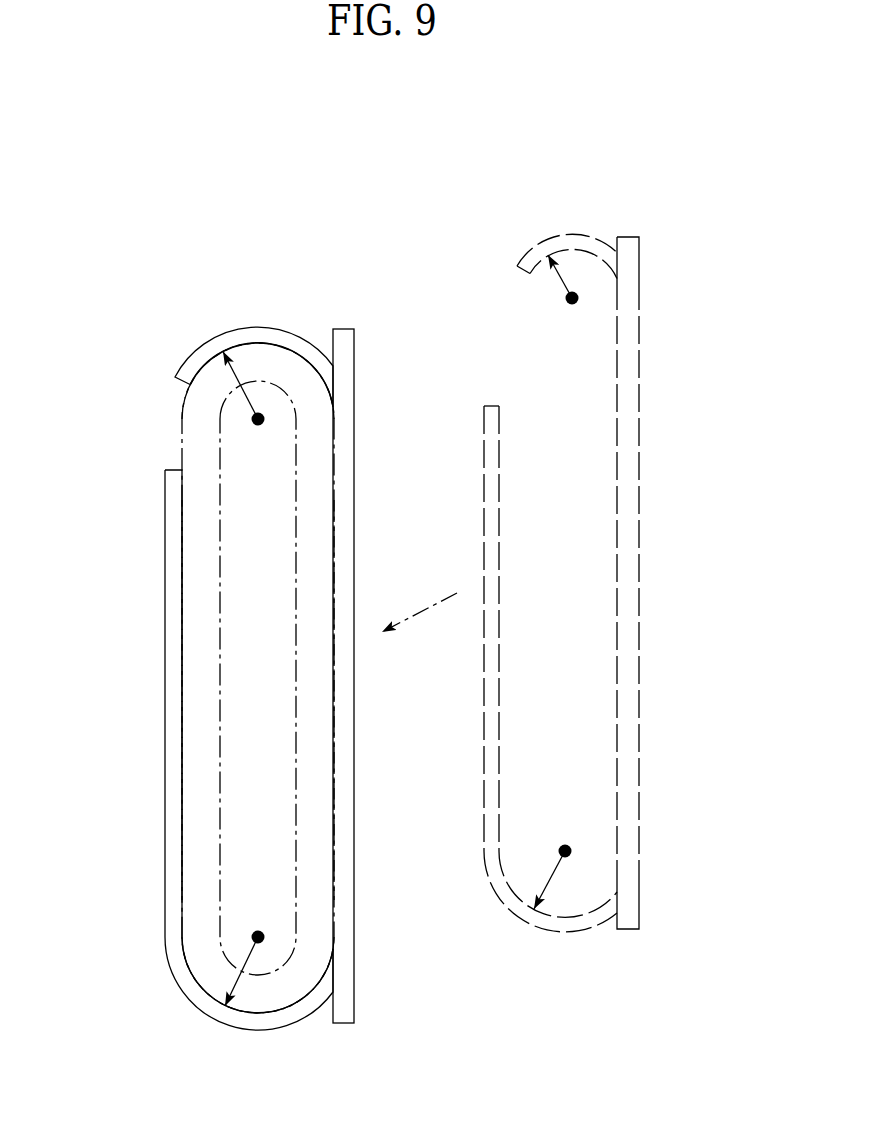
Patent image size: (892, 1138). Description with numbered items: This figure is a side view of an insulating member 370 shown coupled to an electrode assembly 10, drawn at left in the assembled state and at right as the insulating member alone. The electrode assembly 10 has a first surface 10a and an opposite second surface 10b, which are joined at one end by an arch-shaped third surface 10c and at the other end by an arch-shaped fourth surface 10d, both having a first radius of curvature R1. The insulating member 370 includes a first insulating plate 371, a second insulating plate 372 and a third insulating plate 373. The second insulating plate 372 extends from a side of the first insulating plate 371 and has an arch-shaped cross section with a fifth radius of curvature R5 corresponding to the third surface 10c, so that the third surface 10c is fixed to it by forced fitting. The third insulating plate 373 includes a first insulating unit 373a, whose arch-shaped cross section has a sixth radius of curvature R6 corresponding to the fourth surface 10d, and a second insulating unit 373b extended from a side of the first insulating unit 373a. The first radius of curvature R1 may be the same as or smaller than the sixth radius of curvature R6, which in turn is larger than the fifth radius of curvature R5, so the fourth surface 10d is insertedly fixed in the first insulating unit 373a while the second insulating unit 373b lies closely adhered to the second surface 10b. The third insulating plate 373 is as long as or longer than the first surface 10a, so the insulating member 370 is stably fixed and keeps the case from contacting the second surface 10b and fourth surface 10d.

The electrode assembly 10 is at (182, 434).
The first surface 10a is at (337, 883).
The second surface 10b is at (184, 803).
The third surface 10c is at (238, 343).
The fourth surface 10d is at (270, 1010).
The insulating member 370 is at (360, 405).
The first insulating plate 371 is at (343, 498).
The second insulating plate 372 is at (273, 338).
The third insulating plate 373 is at (175, 977).
The first insulating unit 373a is at (562, 930).
The second insulating unit 373b is at (173, 668).
The first radius of curvature R1 is at (236, 679).
The fifth radius of curvature R5 is at (555, 282).
The sixth radius of curvature R6 is at (546, 877).